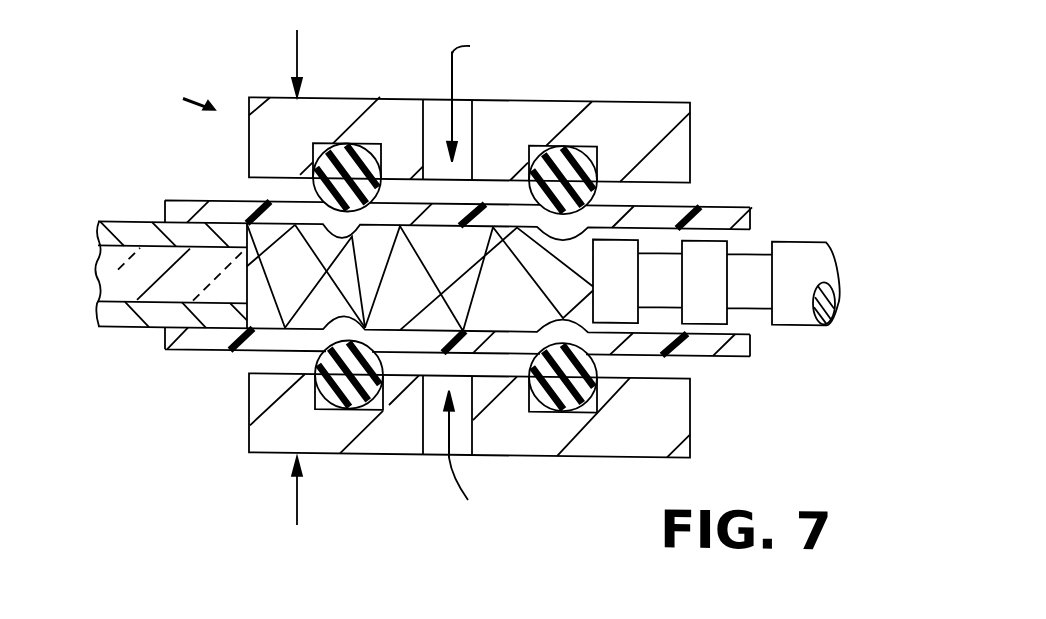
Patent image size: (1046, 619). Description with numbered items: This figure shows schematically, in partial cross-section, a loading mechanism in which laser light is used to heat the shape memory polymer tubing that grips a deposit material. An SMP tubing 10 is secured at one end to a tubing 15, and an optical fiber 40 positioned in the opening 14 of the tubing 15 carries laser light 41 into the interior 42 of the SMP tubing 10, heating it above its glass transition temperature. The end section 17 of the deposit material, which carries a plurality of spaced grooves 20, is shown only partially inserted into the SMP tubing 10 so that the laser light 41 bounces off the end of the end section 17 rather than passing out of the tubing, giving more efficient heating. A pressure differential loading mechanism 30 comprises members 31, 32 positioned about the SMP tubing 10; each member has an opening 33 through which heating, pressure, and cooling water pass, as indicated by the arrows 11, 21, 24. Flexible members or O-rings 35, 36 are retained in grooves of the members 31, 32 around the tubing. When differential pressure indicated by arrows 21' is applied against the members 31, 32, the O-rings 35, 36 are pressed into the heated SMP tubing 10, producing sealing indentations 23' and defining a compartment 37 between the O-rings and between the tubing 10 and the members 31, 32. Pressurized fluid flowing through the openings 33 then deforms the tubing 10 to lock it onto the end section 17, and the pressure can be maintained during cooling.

The SMP tubing 10 is at (212, 355).
The heating arrows 11 is at (516, 286).
The opening 14 is at (140, 228).
The tubing 15 is at (122, 333).
The end section 17 is at (837, 260).
The grooves 20 is at (665, 251).
The pressure arrows 21 is at (518, 286).
The differential pressure arrows 21' is at (265, 278).
The sealing indentations 23' is at (469, 274).
The cooling arrows 24 is at (518, 286).
The pressure differential loading mechanism 30 is at (170, 100).
The member 31 is at (250, 145).
The member 32 is at (248, 431).
The openings 33 is at (437, 118).
The O-ring 35 is at (338, 146).
The O-ring 36 is at (570, 171).
The compartment 37 is at (405, 193).
The optical fiber 40 is at (132, 281).
The laser light 41 is at (303, 308).
The interior 42 is at (303, 286).